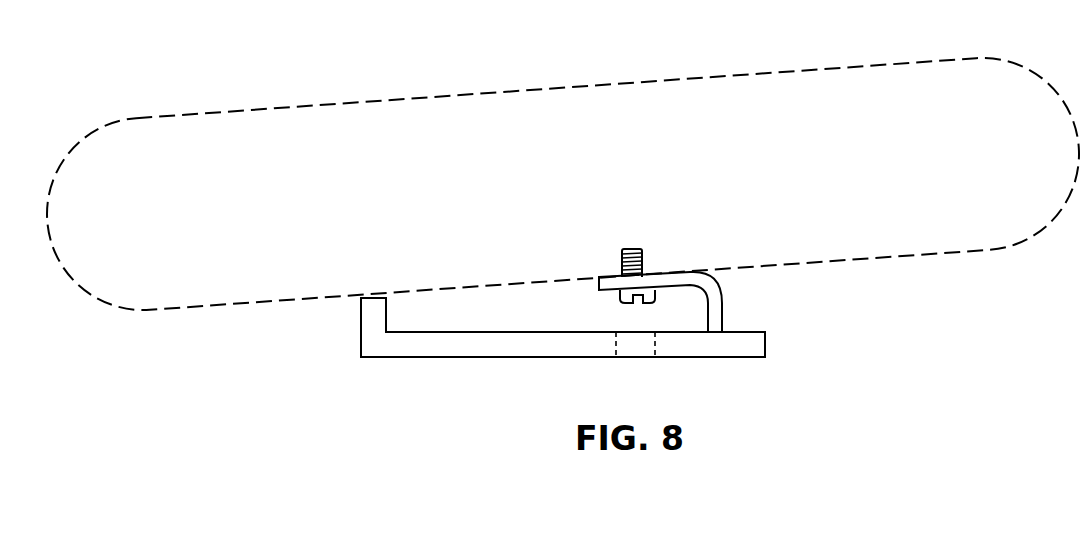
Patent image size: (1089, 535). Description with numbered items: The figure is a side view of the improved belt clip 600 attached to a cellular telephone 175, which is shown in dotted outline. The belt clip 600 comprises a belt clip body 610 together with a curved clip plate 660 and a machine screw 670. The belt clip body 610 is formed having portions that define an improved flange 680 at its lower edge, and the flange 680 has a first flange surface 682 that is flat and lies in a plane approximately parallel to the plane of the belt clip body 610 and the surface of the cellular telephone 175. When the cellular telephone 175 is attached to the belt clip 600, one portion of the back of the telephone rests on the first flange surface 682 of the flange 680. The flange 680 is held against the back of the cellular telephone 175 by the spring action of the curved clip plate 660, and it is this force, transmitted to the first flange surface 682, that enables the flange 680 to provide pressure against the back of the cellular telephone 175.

The cellular telephone 175 is at (382, 116).
The improved belt clip 600 is at (785, 393).
The belt clip body 610 is at (467, 343).
The clip plate 660 is at (723, 302).
The machine screw 670 is at (630, 250).
The flange 680 is at (375, 338).
The first flange surface 682 is at (373, 296).